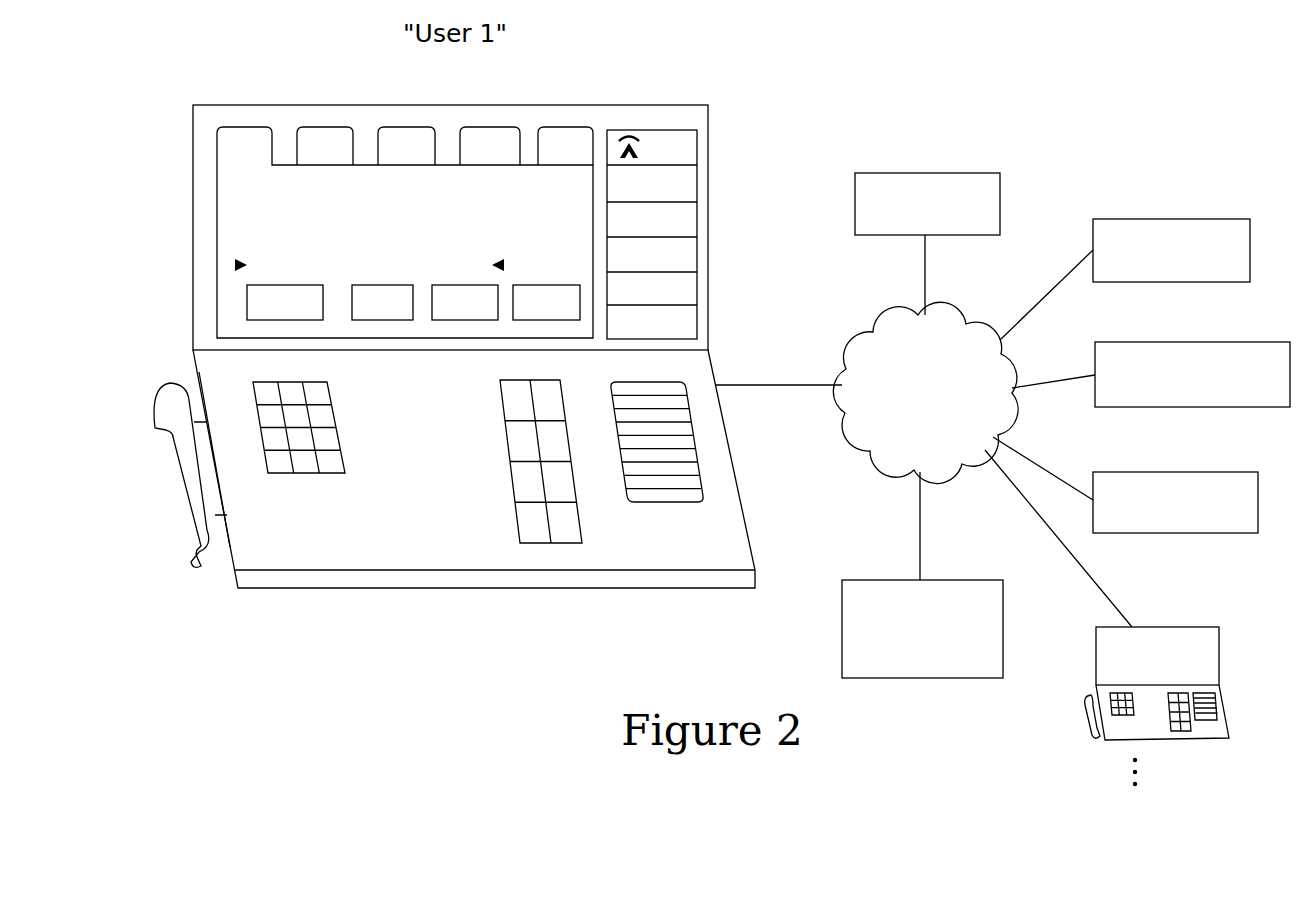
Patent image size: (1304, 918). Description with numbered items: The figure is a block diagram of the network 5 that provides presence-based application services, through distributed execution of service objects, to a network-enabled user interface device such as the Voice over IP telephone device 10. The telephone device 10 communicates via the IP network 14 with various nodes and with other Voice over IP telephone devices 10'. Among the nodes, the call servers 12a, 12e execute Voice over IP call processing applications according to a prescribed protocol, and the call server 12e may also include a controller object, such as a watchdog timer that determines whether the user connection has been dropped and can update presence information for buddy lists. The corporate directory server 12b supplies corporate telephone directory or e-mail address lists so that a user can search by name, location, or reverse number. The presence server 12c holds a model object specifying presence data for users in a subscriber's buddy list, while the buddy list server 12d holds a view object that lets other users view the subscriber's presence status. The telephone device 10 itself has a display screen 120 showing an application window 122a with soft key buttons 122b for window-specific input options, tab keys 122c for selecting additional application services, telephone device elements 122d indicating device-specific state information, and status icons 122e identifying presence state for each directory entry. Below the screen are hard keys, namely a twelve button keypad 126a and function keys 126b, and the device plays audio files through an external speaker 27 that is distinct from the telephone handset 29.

The network 5 is at (436, 697).
The Voice over IP telephone device 10 is at (448, 381).
The other Voice over IP telephone devices 10' is at (1167, 666).
The call server 12a is at (936, 173).
The corporate directory server 12b is at (1212, 219).
The presence server 12c is at (1228, 342).
The buddy list server 12d is at (1183, 472).
The call server 12e is at (1003, 622).
The IP network 14 is at (913, 442).
The external speaker 27 is at (658, 502).
The telephone handset 29 is at (200, 562).
The display screen 120 is at (208, 114).
The application window 122a is at (228, 170).
The soft key buttons 122b is at (292, 320).
The tab keys 122c is at (483, 127).
The telephone device elements 122d is at (687, 145).
The status icons 122e is at (548, 180).
The twelve button keypad 126a is at (292, 489).
The function keys 126b is at (488, 432).